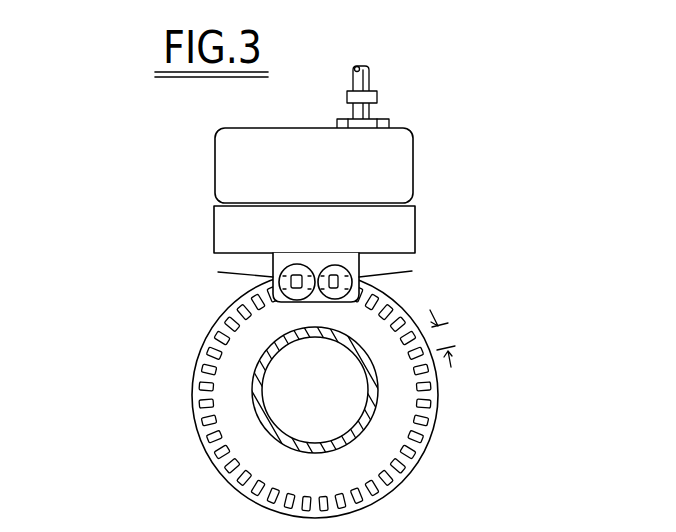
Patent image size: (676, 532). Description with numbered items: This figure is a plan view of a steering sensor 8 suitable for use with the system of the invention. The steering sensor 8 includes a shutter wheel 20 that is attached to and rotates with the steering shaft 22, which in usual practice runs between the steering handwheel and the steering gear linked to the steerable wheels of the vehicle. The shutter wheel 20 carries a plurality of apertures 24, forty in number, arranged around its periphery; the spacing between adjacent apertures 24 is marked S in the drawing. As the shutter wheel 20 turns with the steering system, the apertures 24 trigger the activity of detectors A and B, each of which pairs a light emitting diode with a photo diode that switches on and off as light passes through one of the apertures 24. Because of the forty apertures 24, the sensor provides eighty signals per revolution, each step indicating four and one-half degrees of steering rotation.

The steering sensor 8 is at (133, 332).
The shutter wheel 20 is at (433, 440).
The steering shaft 22 is at (337, 452).
The apertures 24 is at (423, 392).
The slot spacing S is at (450, 335).